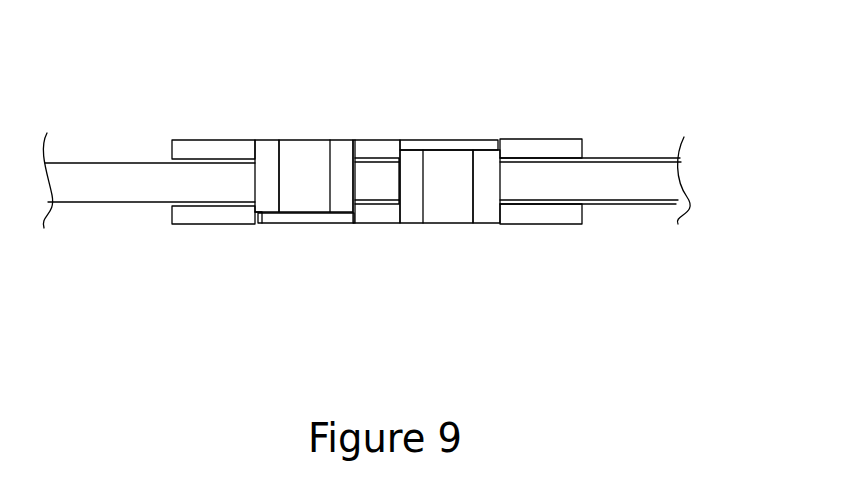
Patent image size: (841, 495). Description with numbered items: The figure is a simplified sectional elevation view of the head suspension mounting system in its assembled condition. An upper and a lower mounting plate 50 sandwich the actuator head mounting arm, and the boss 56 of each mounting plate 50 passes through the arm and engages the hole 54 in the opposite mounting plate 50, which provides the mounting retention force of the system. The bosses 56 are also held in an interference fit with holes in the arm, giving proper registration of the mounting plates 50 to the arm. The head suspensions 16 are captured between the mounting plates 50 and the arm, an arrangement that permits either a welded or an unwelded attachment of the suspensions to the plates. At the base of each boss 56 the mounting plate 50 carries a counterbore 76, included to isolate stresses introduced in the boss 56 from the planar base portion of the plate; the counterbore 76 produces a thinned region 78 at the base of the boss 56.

The head suspension 16 is at (660, 158).
The mounting plate 50 is at (368, 142).
The hole 54 is at (240, 152).
The boss 56 is at (268, 155).
The counterbore 76 is at (482, 152).
The thinned region 78 is at (488, 157).